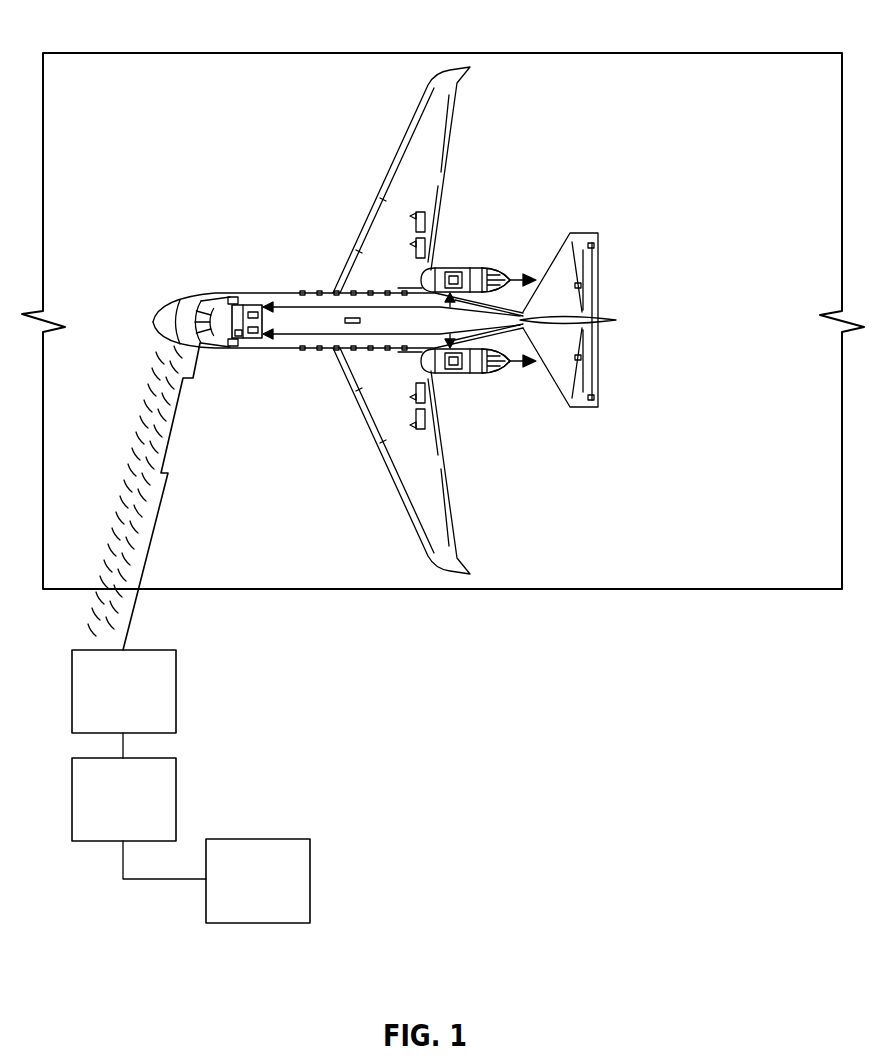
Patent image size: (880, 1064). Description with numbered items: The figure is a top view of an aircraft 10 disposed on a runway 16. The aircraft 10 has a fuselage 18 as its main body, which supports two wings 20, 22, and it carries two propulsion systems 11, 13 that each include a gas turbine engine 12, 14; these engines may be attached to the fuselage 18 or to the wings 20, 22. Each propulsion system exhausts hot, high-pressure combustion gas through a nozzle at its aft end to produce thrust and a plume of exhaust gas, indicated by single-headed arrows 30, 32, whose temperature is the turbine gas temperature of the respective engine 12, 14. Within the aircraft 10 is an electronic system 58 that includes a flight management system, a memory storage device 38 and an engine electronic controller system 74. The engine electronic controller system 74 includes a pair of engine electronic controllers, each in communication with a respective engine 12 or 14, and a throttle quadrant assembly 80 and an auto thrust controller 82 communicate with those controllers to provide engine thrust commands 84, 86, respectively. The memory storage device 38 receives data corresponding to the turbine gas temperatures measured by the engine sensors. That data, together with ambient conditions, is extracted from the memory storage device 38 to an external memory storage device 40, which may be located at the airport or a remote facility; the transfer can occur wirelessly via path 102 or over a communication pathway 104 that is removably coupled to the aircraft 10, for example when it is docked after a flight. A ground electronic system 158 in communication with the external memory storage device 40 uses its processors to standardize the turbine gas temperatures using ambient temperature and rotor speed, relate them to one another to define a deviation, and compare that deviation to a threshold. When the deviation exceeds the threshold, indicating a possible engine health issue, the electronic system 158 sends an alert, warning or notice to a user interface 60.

The aircraft 10 is at (378, 320).
The propulsion system 11 is at (493, 407).
The engine 12 is at (490, 366).
The propulsion system 13 is at (492, 249).
The engine 14 is at (491, 274).
The runway 16 is at (766, 76).
The fuselage 18 is at (299, 293).
The wing 20 is at (405, 457).
The wing 22 is at (408, 173).
The exhaust gas plume 30 is at (530, 366).
The exhaust gas plume 32 is at (527, 278).
The memory storage device 38 is at (217, 298).
The external memory storage device 40 is at (176, 690).
The electronic system 58 is at (232, 299).
The user interface 60 is at (257, 924).
The engine electronic controller system 74 is at (235, 346).
The throttle quadrant assembly 80 is at (243, 338).
The auto thrust controller 82 is at (250, 305).
The engine thrust command 84 is at (316, 335).
The engine thrust command 86 is at (330, 307).
The wireless communication path 102 is at (135, 498).
The communication pathway 104 is at (140, 605).
The electronic system 158 is at (144, 815).